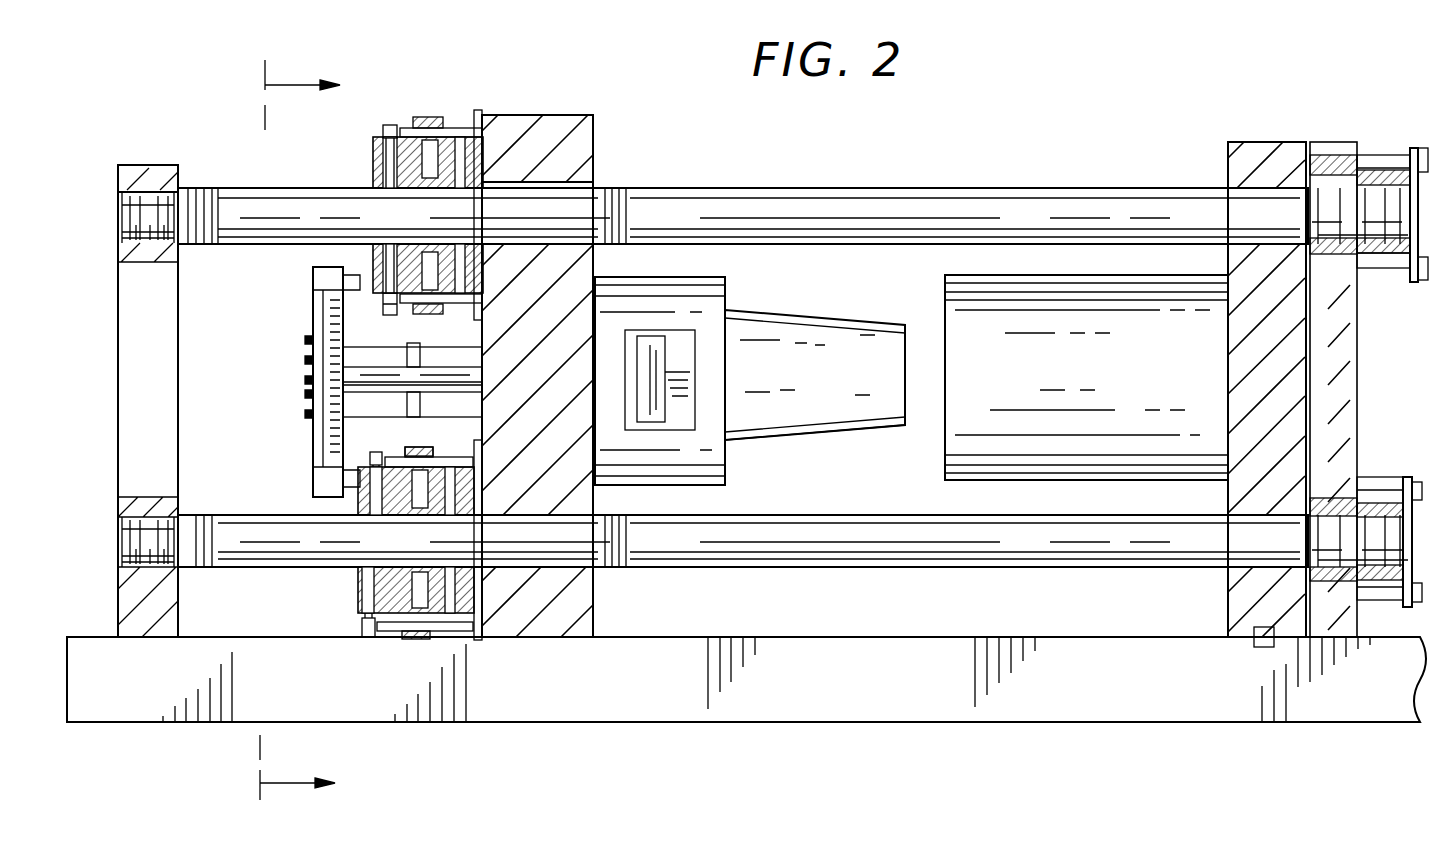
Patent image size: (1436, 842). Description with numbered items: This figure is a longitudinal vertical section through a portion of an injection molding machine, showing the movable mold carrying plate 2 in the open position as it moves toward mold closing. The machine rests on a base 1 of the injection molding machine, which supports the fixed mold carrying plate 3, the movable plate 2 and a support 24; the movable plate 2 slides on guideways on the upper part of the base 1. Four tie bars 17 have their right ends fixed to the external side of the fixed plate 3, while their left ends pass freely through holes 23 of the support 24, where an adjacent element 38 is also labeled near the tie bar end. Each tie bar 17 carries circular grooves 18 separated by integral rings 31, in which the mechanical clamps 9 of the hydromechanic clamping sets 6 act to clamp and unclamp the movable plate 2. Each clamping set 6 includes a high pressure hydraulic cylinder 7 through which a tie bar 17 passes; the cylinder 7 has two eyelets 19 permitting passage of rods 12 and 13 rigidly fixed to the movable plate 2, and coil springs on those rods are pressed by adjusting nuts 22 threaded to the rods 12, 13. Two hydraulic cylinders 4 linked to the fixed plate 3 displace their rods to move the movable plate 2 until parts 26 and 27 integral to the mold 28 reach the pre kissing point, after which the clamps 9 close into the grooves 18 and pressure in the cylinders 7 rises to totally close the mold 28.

The base 1 is at (805, 722).
The movable mold carrying plate 2 is at (550, 128).
The fixed mold carrying plate 3 is at (1228, 168).
The hydraulic cylinders 4 is at (311, 430).
The hydromechanic clamping sets 6 is at (460, 118).
The high pressure hydraulic cylinder 7 is at (455, 467).
The mechanical clamp 9 is at (428, 450).
The rod 12 is at (480, 125).
The rod 13 is at (476, 312).
The tie bar 17 is at (810, 210).
The circular grooves 18 is at (632, 195).
The eyelets 19 is at (430, 117).
The adjusting nuts 22 is at (388, 124).
The holes 23 is at (185, 193).
The support 24 is at (145, 178).
The part 26 is at (822, 332).
The part 27 is at (1060, 295).
The mold 28 is at (905, 430).
The integral rings 31 is at (205, 245).
The lock ring 38 is at (222, 245).